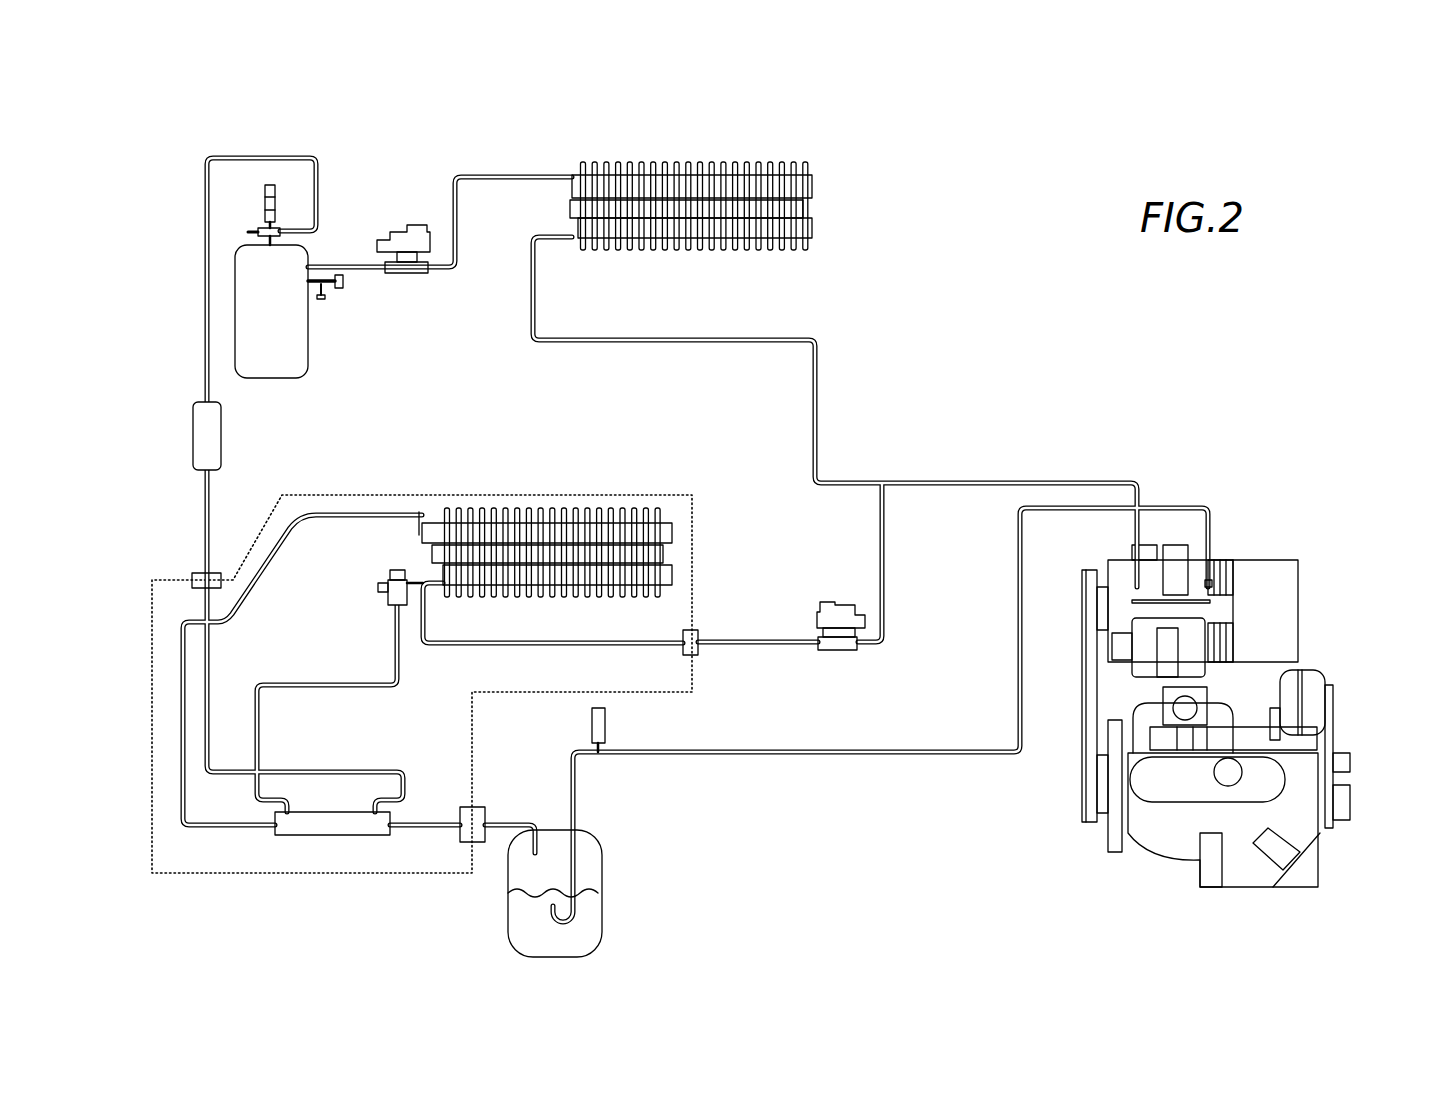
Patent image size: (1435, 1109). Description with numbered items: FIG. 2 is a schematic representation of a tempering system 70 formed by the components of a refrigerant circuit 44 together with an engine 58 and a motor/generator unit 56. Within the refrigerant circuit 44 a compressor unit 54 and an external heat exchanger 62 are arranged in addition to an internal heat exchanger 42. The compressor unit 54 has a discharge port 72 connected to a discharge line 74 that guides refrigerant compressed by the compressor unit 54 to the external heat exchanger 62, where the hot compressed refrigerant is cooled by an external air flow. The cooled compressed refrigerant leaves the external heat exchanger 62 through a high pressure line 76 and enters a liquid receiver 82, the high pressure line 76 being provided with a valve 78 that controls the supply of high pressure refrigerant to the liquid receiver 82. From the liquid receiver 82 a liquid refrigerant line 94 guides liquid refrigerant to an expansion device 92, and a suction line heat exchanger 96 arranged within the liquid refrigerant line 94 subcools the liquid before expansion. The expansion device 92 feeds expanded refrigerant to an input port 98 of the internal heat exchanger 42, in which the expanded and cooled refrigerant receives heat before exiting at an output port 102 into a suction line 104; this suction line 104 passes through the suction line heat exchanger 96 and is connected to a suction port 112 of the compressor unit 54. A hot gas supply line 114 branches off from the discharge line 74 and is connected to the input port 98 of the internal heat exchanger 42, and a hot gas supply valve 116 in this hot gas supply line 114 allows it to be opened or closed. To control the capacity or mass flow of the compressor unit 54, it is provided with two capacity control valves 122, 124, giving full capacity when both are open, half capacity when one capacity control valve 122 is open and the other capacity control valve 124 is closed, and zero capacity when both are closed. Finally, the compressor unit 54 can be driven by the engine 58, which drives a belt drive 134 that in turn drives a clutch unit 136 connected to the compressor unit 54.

The internal heat exchanger 42 is at (545, 508).
The refrigerant circuit 44 is at (892, 408).
The compressor unit 54 is at (1195, 604).
The motor/generator unit 56 is at (1275, 574).
The engine 58 is at (1340, 878).
The external heat exchanger 62 is at (700, 173).
The tempering system 70 is at (941, 266).
The discharge port 72 is at (1137, 585).
The discharge line 74 is at (997, 481).
The high pressure line 76 is at (500, 177).
The valve 78 is at (412, 226).
The liquid receiver 82 is at (325, 385).
The expansion device 92 is at (370, 607).
The liquid refrigerant line 94 is at (207, 350).
The suction line heat exchanger 96 is at (330, 837).
The input port 98 is at (426, 592).
The output port 102 is at (430, 520).
The suction line 104 is at (305, 520).
The suction port 112 is at (1212, 580).
The hot gas supply line 114 is at (765, 646).
The hot gas supply valve 116 is at (815, 595).
The capacity control valve 122 is at (1175, 555).
The capacity control valve 124 is at (1170, 655).
The belt drive 134 is at (1088, 715).
The clutch unit 136 is at (1088, 601).